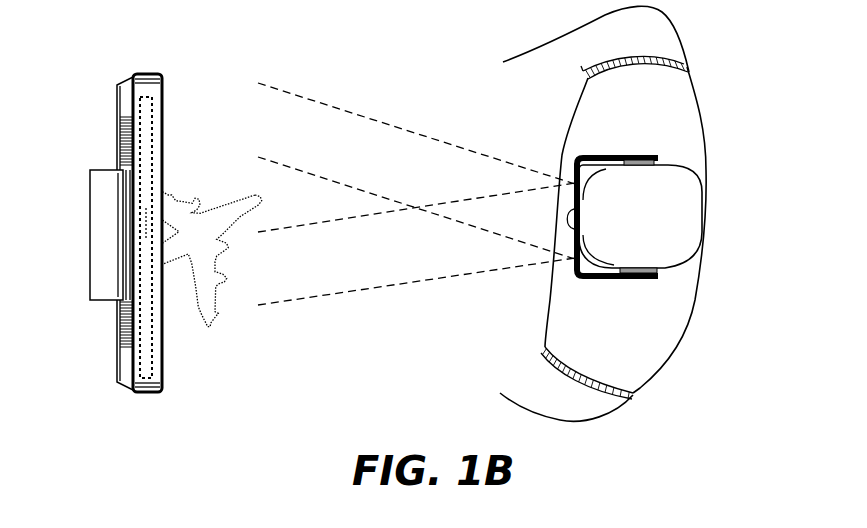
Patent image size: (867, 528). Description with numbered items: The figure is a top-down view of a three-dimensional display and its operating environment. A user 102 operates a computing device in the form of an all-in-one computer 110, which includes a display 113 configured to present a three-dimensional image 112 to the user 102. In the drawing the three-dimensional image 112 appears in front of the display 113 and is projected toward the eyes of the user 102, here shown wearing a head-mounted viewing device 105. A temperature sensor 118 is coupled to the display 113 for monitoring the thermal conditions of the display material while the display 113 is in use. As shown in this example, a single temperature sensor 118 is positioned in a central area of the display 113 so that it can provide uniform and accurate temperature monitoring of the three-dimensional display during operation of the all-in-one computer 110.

The user 102 is at (702, 127).
The near-eye display / optical assembly 105 is at (598, 280).
The all-in-one computer 110 is at (146, 392).
The three-dimensional image 112 is at (211, 318).
The display 113 is at (152, 106).
The temperature sensor 118 is at (147, 212).